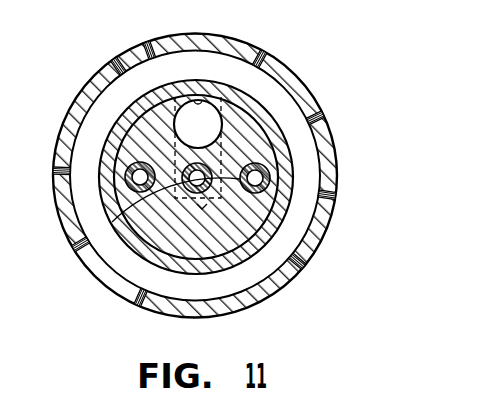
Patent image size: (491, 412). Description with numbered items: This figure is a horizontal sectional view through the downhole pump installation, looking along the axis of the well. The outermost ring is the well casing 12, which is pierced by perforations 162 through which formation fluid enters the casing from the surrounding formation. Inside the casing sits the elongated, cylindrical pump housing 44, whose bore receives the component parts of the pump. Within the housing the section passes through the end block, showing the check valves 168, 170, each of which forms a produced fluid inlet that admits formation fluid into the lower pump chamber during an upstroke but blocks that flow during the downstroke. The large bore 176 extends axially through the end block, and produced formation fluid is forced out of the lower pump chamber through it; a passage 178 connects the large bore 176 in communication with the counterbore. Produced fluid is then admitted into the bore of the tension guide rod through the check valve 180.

The well casing 12 is at (200, 33).
The pump housing 44 is at (244, 97).
The perforations 162 is at (148, 44).
The check valve 168 is at (107, 141).
The check valve 170 is at (270, 180).
The large bore 176 is at (198, 100).
The passage 178 is at (272, 124).
The check valve 180 is at (111, 222).